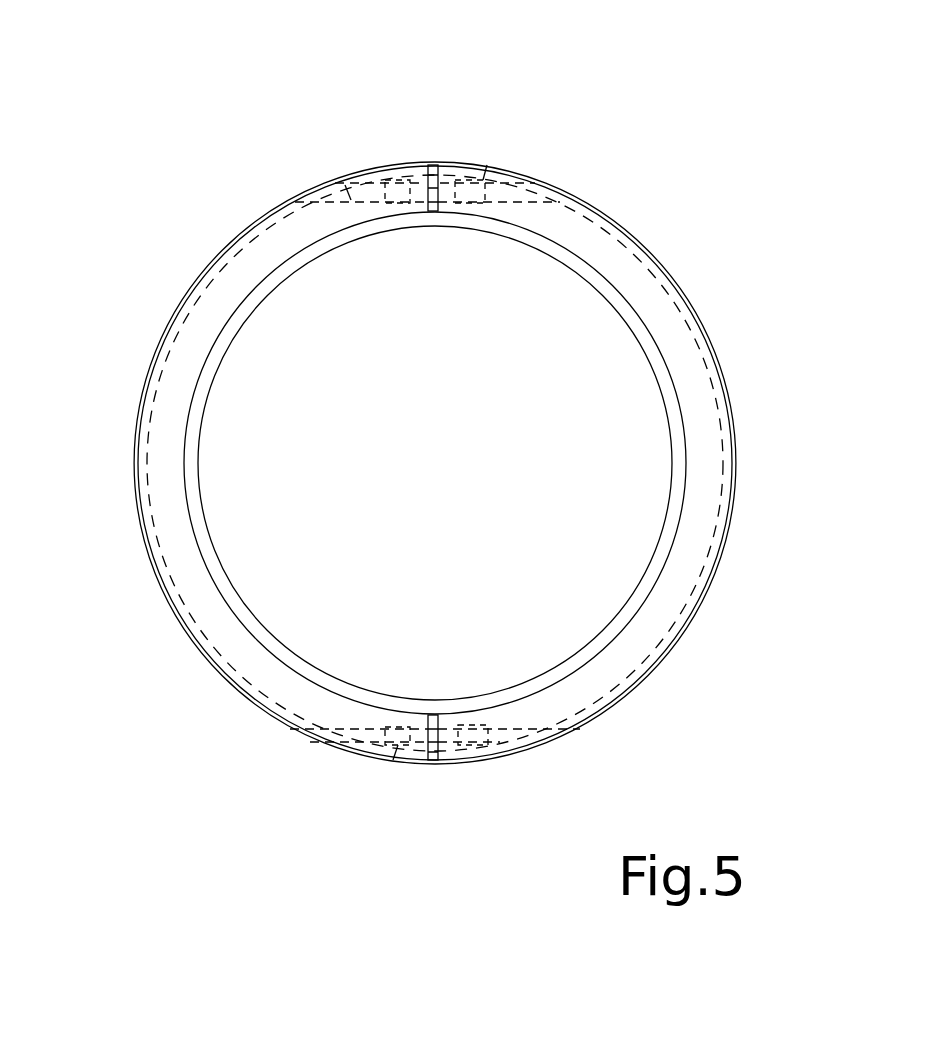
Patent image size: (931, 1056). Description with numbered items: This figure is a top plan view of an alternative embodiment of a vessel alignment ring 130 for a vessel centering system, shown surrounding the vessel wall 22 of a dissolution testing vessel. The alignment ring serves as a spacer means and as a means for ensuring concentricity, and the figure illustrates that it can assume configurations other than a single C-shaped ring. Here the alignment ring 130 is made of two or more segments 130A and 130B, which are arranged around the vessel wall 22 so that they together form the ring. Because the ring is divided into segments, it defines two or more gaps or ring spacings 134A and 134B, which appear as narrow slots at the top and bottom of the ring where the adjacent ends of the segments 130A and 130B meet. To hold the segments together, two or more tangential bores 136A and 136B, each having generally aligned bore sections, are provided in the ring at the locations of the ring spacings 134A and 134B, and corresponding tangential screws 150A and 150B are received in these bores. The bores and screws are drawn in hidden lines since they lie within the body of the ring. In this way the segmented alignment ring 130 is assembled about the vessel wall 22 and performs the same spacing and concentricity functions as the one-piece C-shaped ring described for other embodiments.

The alignment ring 130 is at (678, 162).
The segment 130A is at (157, 352).
The segment 130B is at (732, 513).
The vessel wall 22 is at (195, 532).
The ring spacing 134A is at (432, 165).
The ring spacing 134B is at (434, 760).
The tangential bore 136A is at (345, 185).
The tangential bore 136B is at (527, 745).
The tangential screw 150A is at (487, 165).
The tangential screw 150B is at (393, 760).